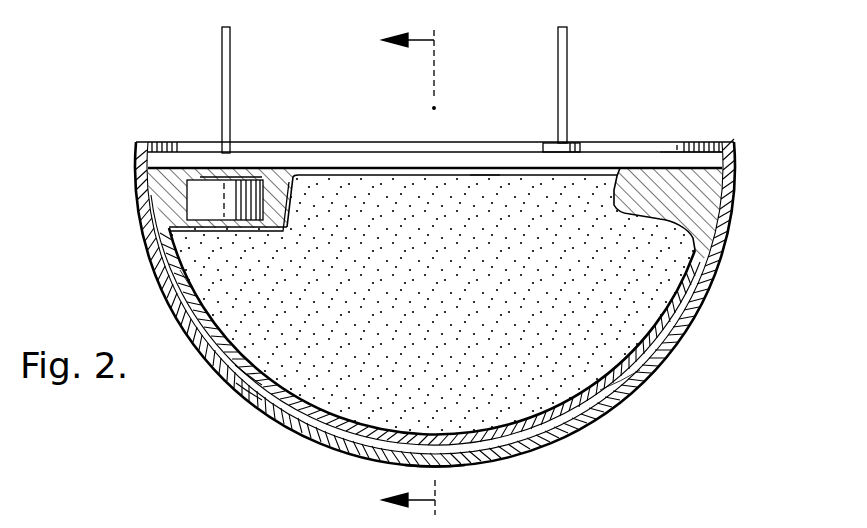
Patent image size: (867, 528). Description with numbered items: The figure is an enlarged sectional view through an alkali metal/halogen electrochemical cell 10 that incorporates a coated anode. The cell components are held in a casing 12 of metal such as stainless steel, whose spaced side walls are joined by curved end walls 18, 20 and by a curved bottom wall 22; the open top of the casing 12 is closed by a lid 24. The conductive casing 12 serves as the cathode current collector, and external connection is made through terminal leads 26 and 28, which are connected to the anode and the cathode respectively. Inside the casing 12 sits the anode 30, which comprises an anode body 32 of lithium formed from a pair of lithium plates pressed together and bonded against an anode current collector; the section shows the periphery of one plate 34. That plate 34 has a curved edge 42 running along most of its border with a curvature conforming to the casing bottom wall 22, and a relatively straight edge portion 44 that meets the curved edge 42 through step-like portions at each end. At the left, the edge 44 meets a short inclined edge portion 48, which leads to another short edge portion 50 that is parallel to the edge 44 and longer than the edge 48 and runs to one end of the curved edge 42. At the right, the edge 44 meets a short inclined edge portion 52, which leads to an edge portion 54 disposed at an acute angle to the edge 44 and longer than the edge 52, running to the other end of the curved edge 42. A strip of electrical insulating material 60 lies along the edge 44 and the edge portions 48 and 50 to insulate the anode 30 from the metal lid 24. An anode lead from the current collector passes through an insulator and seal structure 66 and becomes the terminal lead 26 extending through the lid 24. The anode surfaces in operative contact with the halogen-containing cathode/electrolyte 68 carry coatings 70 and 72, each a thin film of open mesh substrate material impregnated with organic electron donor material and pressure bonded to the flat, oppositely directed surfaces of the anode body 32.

The alkali metal/halogen electrochemical cell 10 is at (666, 57).
The casing 12 is at (680, 355).
The curved end wall 18 is at (142, 185).
The curved end wall 20 is at (735, 160).
The curved bottom wall 22 is at (467, 467).
The lid 24 is at (400, 160).
The terminal lead 26 is at (222, 45).
The terminal lead 28 is at (567, 46).
The anode 30 is at (707, 252).
The anode body 32 is at (655, 280).
The lithium plate 34 is at (278, 415).
The curved edge 42 is at (262, 403).
The straight edge portion 44 is at (355, 176).
The inclined edge portion 48 is at (313, 178).
The edge portion 50 is at (188, 236).
The inclined edge portion 52 is at (645, 152).
The edge portion 54 is at (667, 220).
The insulating material strip 60 is at (485, 175).
The insulator and seal structure 66 is at (196, 198).
The halogen-containing cathode/electrolyte 68 is at (175, 152).
The coating 70 is at (217, 277).
The coating 72 is at (285, 330).